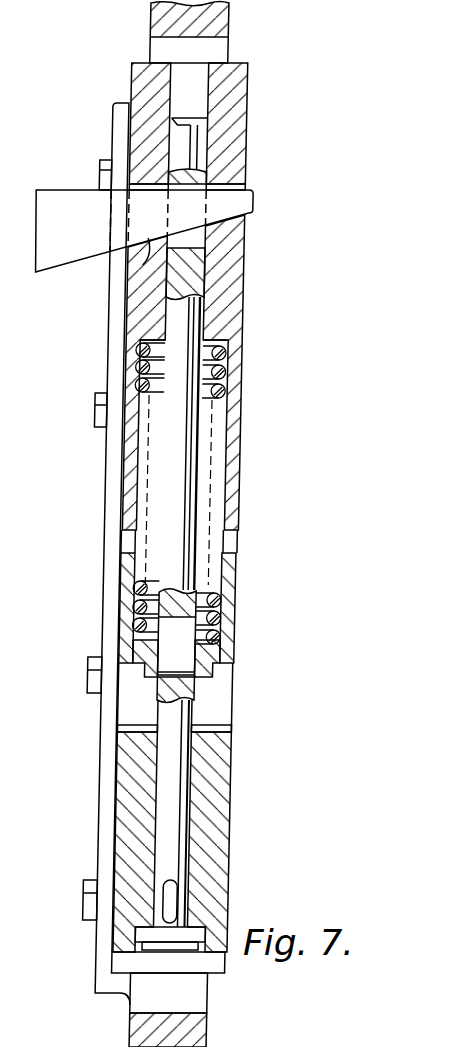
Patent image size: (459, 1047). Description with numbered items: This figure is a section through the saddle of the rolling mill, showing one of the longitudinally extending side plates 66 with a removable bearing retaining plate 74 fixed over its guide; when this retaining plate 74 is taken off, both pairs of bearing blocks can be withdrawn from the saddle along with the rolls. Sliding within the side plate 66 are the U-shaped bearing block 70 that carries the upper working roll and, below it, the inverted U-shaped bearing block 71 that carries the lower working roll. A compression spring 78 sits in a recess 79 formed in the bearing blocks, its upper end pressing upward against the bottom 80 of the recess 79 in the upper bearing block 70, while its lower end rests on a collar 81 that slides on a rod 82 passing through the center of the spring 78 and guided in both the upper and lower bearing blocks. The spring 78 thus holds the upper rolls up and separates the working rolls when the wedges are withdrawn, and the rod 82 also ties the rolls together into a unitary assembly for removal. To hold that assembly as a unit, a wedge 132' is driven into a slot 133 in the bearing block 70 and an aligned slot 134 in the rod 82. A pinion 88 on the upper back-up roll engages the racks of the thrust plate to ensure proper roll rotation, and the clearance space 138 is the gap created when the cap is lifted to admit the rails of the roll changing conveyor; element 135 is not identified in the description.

The side plate 66 is at (229, 32).
The U-shaped bearing block 70 is at (240, 108).
The bearing retaining plate 74 is at (116, 122).
The wedge 132' is at (132, 194).
The slot 133 is at (247, 178).
The slot 134 is at (196, 246).
The bushing 135 is at (152, 258).
The bottom of recess 80 is at (138, 328).
The compression spring 78 is at (228, 358).
The recess 79 is at (143, 443).
The rod 82 is at (192, 470).
The collar 81 is at (127, 640).
The inverted U-shaped bearing block 71 is at (226, 652).
The pinion 88 is at (182, 933).
The clearance space 138 is at (193, 992).